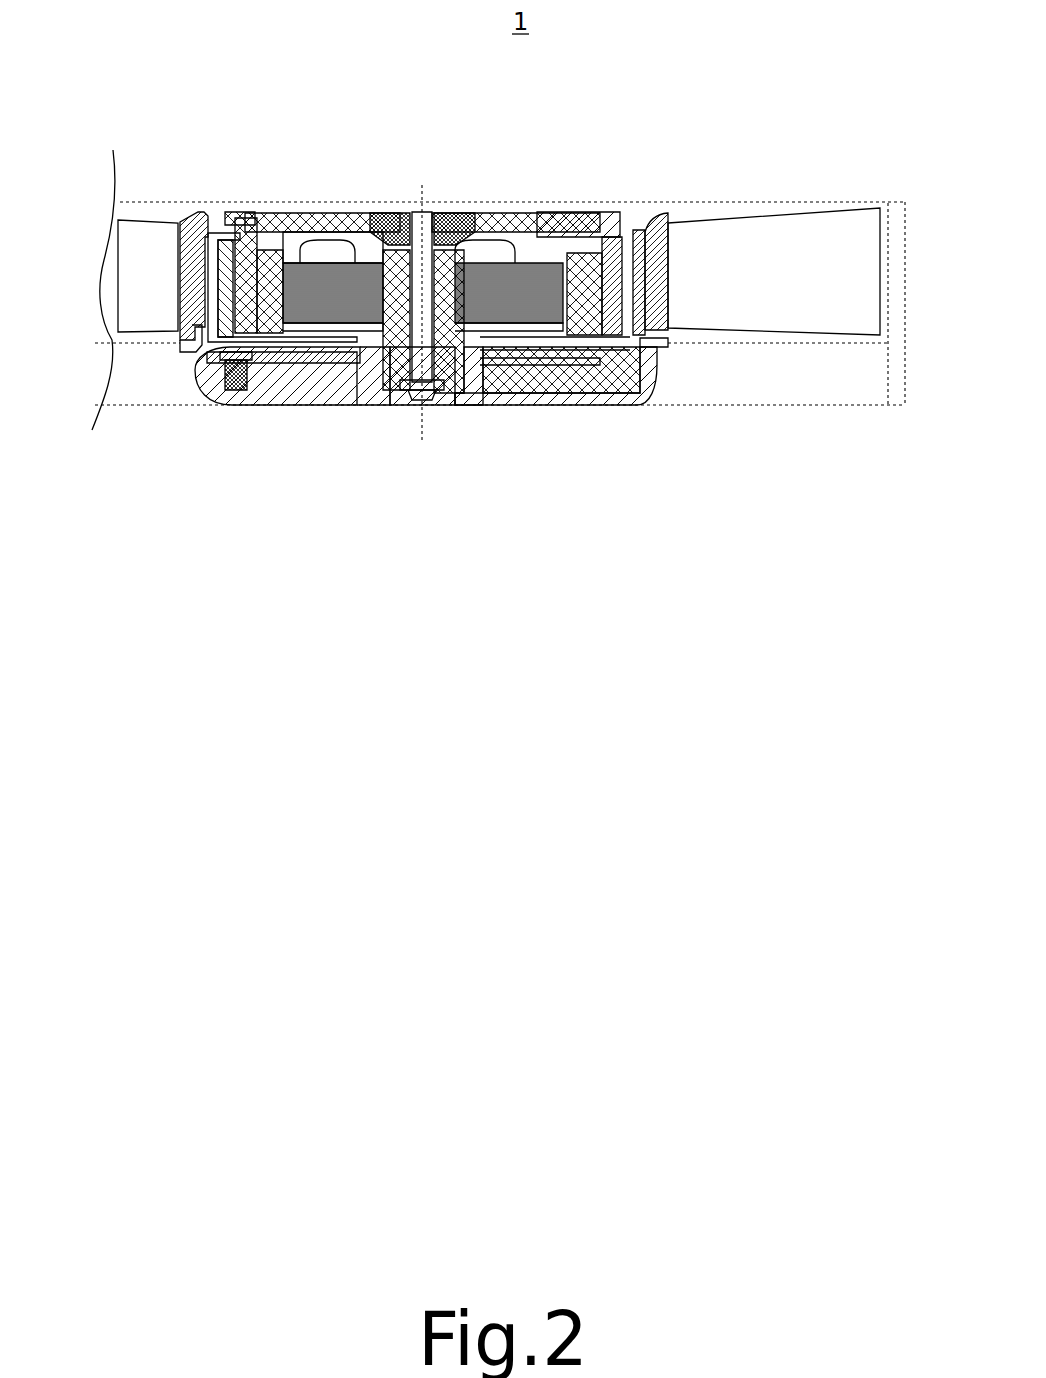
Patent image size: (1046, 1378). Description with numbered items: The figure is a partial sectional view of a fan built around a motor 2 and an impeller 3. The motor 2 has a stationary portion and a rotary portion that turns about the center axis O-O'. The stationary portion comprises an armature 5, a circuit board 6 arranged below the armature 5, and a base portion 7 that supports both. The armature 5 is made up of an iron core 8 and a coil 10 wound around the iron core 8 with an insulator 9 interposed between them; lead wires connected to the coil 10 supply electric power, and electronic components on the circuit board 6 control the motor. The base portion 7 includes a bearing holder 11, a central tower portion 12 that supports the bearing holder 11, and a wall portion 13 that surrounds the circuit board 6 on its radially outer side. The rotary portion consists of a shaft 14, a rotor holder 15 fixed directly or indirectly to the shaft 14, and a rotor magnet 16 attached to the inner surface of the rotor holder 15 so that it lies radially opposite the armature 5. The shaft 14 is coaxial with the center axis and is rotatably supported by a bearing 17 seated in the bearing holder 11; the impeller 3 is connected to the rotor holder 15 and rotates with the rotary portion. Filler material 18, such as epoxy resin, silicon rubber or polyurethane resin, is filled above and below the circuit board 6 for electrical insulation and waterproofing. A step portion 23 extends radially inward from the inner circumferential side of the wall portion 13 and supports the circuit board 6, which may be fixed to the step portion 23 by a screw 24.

The motor 2 is at (180, 388).
The impeller 3 is at (795, 250).
The armature 5 is at (505, 225).
The circuit board 6 is at (617, 408).
The base portion 7 is at (295, 406).
The iron core 8 is at (590, 218).
The insulator 9 is at (360, 213).
The coil 10 is at (328, 213).
The bearing holder 11 is at (465, 408).
The central tower portion 12 is at (483, 408).
The wall portion 13 is at (668, 408).
The shaft 14 is at (440, 210).
The rotor holder 15 is at (247, 213).
The rotor magnet 16 is at (267, 213).
The bearing 17 is at (394, 213).
The filler material 18 is at (567, 408).
The step portion 23 is at (648, 408).
The screw 24 is at (234, 408).